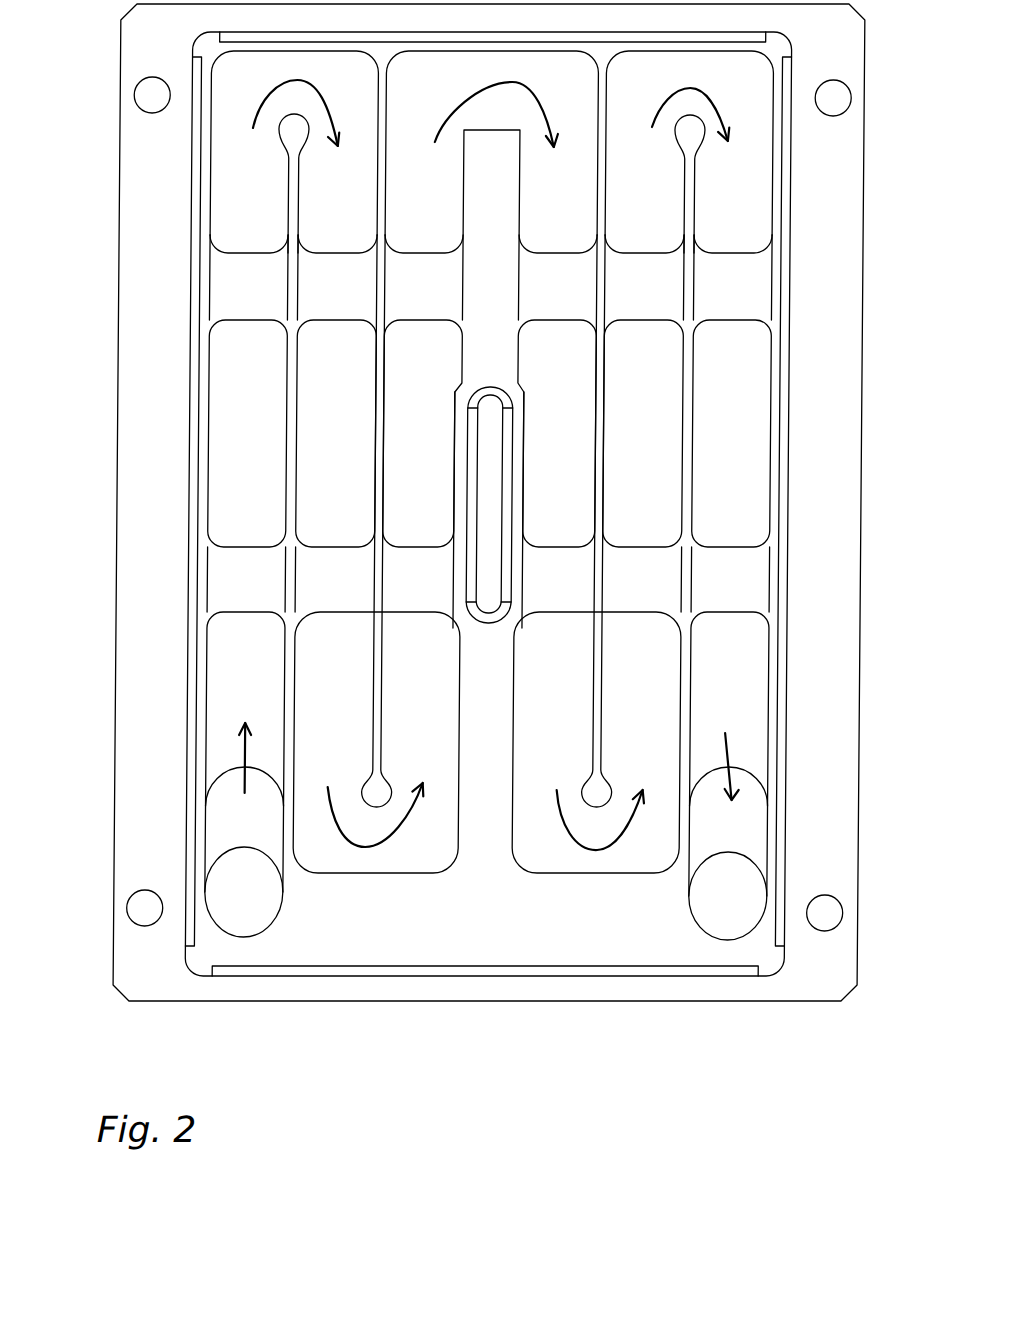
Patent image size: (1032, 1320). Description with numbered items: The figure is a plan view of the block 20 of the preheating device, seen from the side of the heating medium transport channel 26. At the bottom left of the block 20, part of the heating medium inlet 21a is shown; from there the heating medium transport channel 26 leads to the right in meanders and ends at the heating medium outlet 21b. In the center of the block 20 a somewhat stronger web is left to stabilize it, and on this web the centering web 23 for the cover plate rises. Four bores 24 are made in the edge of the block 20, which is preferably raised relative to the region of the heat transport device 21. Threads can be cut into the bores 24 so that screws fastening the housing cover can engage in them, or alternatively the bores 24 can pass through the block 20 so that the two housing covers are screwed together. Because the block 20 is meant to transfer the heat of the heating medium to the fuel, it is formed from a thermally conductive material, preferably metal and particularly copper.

The block 20 is at (773, 1005).
The heat transport device 21 is at (485, 935).
The heating medium inlet 21a is at (257, 920).
The heating medium outlet 21b is at (729, 918).
The centering web 23 is at (487, 387).
The bores 24 is at (146, 95).
The heating medium transport channel 26 is at (237, 575).